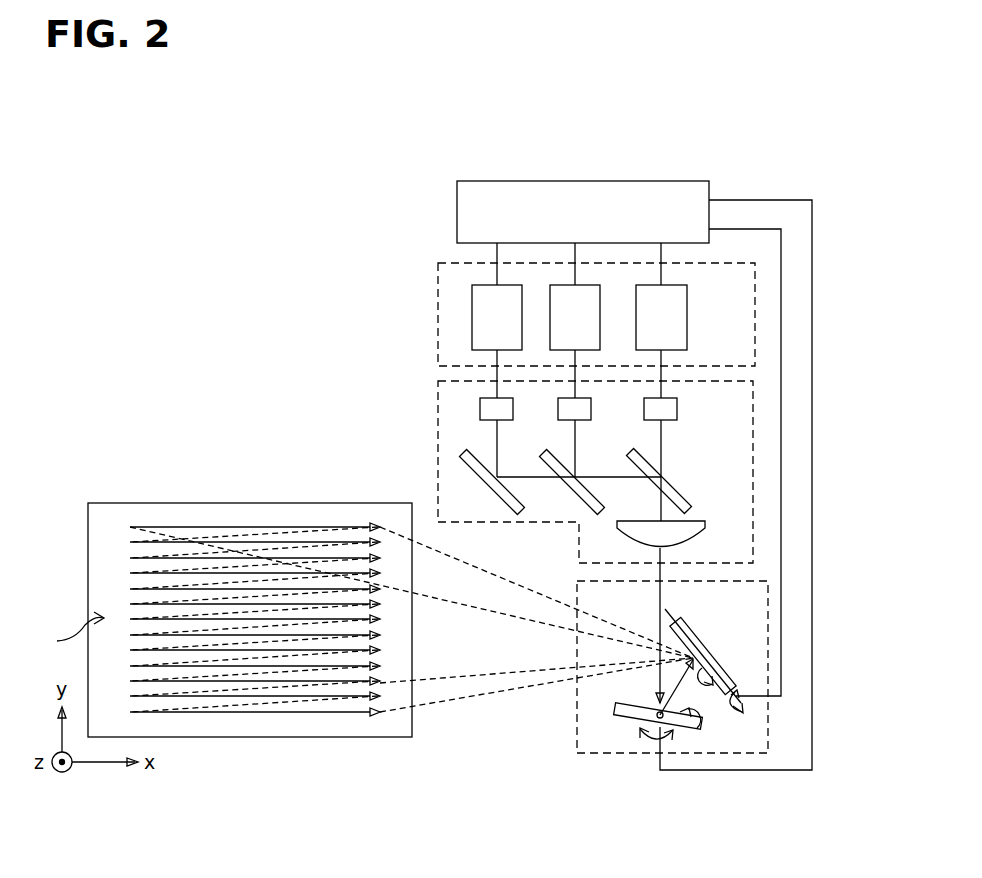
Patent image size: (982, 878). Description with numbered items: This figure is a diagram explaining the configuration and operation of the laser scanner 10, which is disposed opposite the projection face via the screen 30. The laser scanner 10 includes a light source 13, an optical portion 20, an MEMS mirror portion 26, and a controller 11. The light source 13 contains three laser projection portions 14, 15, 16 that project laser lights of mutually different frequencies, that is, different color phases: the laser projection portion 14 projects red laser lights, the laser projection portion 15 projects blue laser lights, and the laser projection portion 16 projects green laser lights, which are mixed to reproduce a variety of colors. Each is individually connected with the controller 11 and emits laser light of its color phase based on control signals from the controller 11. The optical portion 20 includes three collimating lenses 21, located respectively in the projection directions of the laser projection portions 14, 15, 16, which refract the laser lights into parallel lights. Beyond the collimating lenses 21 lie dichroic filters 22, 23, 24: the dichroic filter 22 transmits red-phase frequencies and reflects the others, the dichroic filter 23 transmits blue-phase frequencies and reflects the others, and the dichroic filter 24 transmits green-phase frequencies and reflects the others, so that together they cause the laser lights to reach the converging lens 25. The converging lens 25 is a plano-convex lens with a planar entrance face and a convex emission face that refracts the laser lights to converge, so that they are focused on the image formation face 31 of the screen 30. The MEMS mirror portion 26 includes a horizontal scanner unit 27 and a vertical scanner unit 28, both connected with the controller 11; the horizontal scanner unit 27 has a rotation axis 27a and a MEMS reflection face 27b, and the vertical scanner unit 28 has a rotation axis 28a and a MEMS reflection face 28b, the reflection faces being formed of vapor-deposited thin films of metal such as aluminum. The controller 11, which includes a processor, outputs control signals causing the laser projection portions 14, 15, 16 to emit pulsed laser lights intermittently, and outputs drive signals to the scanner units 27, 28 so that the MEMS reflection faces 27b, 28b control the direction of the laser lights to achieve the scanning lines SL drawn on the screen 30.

The laser scanner 10 is at (385, 193).
The controller 11 is at (668, 181).
The light source 13 is at (437, 273).
The laser projection portion 14 is at (688, 315).
The laser projection portion 15 is at (601, 315).
The laser projection portion 16 is at (523, 315).
The optical portion 20 is at (437, 400).
The collimating lens 21 is at (513, 410).
The dichroic filter 22 is at (685, 483).
The dichroic filter 23 is at (592, 492).
The dichroic filter 24 is at (515, 492).
The converging lens 25 is at (707, 528).
The MEMS mirror portion 26 is at (777, 752).
The horizontal scanner unit 27 is at (615, 706).
The rotation axis 27a is at (643, 740).
The MEMS reflection face 27b is at (697, 724).
The vertical scanner unit 28 is at (693, 624).
The rotation axis 28a is at (667, 608).
The MEMS reflection face 28b is at (702, 670).
The screen 30 is at (260, 503).
The image formation face 31 is at (67, 634).
The scanning lines SL is at (190, 527).